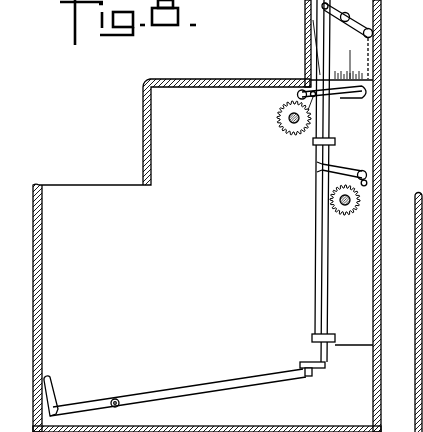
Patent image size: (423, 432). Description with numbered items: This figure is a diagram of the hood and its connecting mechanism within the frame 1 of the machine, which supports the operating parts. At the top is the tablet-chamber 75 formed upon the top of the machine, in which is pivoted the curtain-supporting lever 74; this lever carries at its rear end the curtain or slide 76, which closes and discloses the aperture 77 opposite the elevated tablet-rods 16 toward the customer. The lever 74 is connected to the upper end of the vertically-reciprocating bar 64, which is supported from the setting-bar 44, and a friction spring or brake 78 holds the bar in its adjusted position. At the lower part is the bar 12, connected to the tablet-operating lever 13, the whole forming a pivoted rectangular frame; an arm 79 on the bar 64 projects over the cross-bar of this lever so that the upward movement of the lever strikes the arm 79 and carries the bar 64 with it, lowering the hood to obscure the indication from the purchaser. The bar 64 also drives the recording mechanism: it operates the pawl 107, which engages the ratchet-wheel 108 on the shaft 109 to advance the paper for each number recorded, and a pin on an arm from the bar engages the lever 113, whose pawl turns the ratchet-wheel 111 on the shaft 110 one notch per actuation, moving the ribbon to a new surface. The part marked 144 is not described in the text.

The frame 1 is at (150, 134).
The bar 12 is at (49, 379).
The tablet-operating lever 13 is at (194, 389).
The tablet-rods 16 is at (346, 71).
The setting-bar 44 is at (264, 6).
The vertically-reciprocating bar 64 is at (325, 259).
The curtain-supporting lever 74 is at (372, 33).
The tablet-chamber 75 is at (305, 40).
The curtain or slide 76 is at (369, 58).
The aperture 77 is at (379, 70).
The friction spring or brake 78 is at (316, 50).
The arm 79 is at (316, 371).
The pawl 107 is at (343, 168).
The ratchet-wheel 108 is at (330, 209).
The shaft 109 is at (348, 207).
The shaft 110 is at (292, 124).
The ratchet-wheel 111 is at (278, 118).
The lever 113 is at (336, 98).
The stop block 144 is at (309, 377).